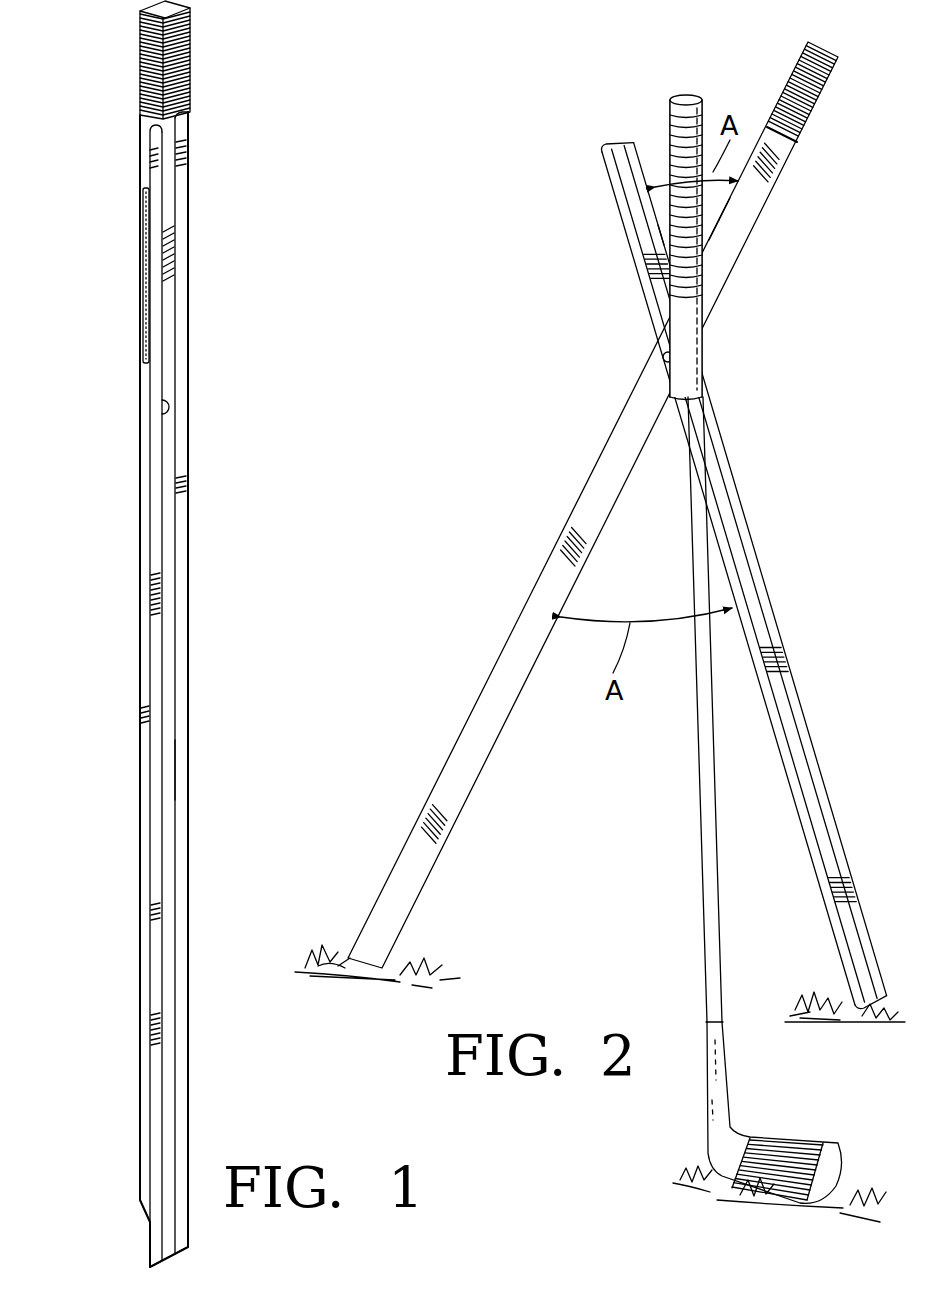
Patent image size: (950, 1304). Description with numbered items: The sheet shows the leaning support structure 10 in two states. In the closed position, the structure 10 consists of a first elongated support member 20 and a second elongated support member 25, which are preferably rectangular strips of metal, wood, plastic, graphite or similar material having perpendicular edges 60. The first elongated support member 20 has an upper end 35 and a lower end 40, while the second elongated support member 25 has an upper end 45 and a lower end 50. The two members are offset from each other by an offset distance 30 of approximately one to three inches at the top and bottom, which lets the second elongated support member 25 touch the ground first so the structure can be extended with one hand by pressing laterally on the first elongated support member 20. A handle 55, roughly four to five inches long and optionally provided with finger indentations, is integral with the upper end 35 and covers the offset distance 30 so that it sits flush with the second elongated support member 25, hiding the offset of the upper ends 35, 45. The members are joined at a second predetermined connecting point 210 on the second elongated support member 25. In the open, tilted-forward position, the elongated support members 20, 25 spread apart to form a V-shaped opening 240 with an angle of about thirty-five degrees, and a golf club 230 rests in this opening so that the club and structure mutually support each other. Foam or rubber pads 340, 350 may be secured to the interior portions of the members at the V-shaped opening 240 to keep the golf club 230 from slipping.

In FIG. 1, the leaning support structure 10 is at (256, 72).
In FIG. 2, the leaning support structure 10 is at (584, 100).
In FIG. 1, the first elongated support member 20 is at (134, 634).
In FIG. 2, the first elongated support member 20 is at (780, 184).
In FIG. 1, the second elongated support member 25 is at (194, 585).
In FIG. 2, the second elongated support member 25 is at (613, 200).
In FIG. 1, the offset distance 30 is at (143, 1220).
In FIG. 1, the upper end 35 is at (140, 150).
In FIG. 1, the lower end 40 is at (139, 1200).
In FIG. 1, the upper end 45 is at (191, 140).
In FIG. 1, the lower end 50 is at (191, 1252).
In FIG. 1, the handle 55 is at (139, 62).
In FIG. 1, the perpendicular edges 60 is at (180, 768).
In FIG. 1, the second predetermined connecting point 210 is at (171, 407).
In FIG. 2, the second predetermined connecting point 210 is at (664, 366).
In FIG. 2, the golf club 230 is at (700, 856).
In FIG. 2, the V-shaped opening 240 is at (707, 230).
In FIG. 2, the foam or rubber pad 340 is at (713, 205).
In FIG. 1, the foam or rubber pad 350 is at (141, 285).
In FIG. 2, the foam or rubber pad 350 is at (665, 232).